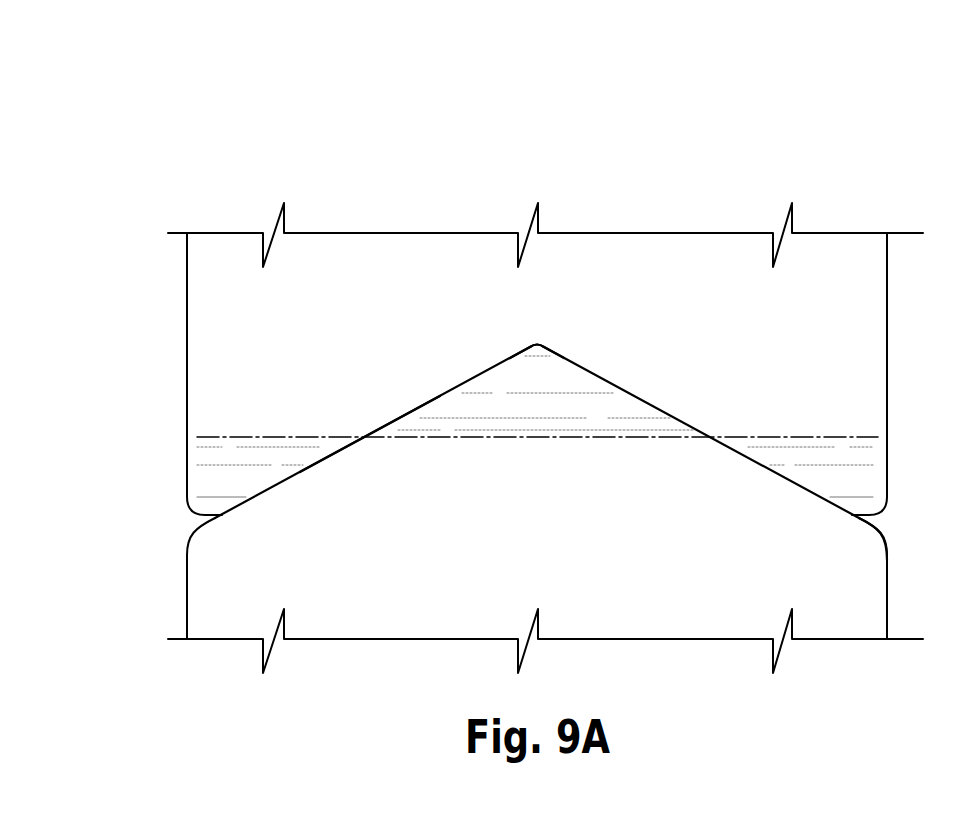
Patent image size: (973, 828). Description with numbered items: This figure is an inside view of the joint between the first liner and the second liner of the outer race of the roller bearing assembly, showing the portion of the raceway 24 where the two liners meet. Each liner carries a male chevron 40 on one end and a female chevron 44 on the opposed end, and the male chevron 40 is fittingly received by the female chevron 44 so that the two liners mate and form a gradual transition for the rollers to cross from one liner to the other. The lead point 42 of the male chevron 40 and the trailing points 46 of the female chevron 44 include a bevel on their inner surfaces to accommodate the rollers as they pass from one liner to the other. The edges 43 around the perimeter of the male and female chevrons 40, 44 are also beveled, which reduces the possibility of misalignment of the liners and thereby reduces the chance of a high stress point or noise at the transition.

The raceway 24 is at (517, 529).
The male chevron 40 is at (692, 425).
The lead point 42 is at (533, 373).
The edges 43 is at (888, 530).
The female chevron 44 is at (420, 407).
The trailing points 46 is at (212, 486).